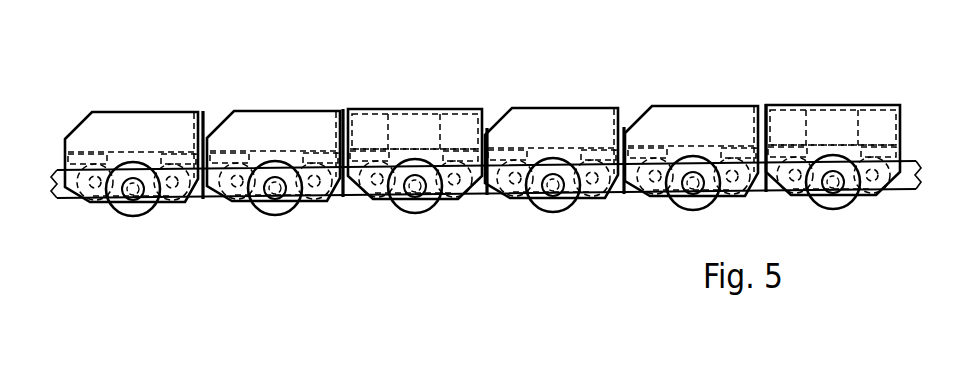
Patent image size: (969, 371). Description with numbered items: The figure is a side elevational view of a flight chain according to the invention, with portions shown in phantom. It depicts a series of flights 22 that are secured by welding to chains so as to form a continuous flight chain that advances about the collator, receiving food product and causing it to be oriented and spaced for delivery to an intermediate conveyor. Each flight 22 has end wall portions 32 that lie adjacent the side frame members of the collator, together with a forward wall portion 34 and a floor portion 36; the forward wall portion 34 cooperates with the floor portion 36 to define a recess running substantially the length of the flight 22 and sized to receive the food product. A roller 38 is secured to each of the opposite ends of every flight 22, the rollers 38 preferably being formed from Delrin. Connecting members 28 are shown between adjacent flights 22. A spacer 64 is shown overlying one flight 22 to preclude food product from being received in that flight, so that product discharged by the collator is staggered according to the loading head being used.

The flight 22 is at (185, 87).
The connecting link 28 is at (204, 202).
The end wall portion 32 is at (122, 120).
The forward wall portion 34 is at (335, 122).
The floor portion 36 is at (297, 150).
The roller 38 is at (414, 212).
The spacer 64 is at (811, 106).